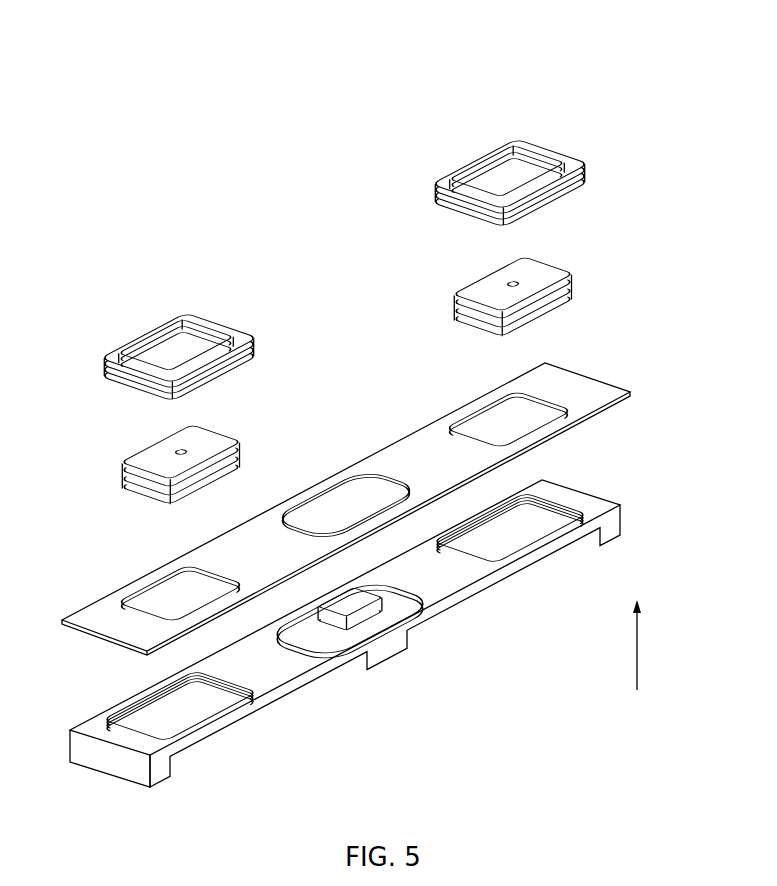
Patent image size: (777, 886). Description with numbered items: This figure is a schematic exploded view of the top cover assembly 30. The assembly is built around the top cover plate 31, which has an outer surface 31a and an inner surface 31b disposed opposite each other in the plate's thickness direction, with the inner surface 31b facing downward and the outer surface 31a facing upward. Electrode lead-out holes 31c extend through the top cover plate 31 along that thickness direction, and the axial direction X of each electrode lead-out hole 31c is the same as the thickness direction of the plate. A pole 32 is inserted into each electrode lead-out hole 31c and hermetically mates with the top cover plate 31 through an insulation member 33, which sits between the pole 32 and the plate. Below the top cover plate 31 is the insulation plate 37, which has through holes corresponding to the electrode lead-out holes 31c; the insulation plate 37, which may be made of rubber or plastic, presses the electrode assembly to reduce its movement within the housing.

The top cover assembly 30 is at (298, 31).
The top cover plate 31 is at (107, 620).
The outer surface 31a is at (411, 455).
The inner surface 31b is at (582, 425).
The electrode lead-out hole 31c is at (178, 595).
The pole 32 is at (538, 270).
The insulation member 33 is at (157, 328).
The insulation plate 37 is at (385, 648).